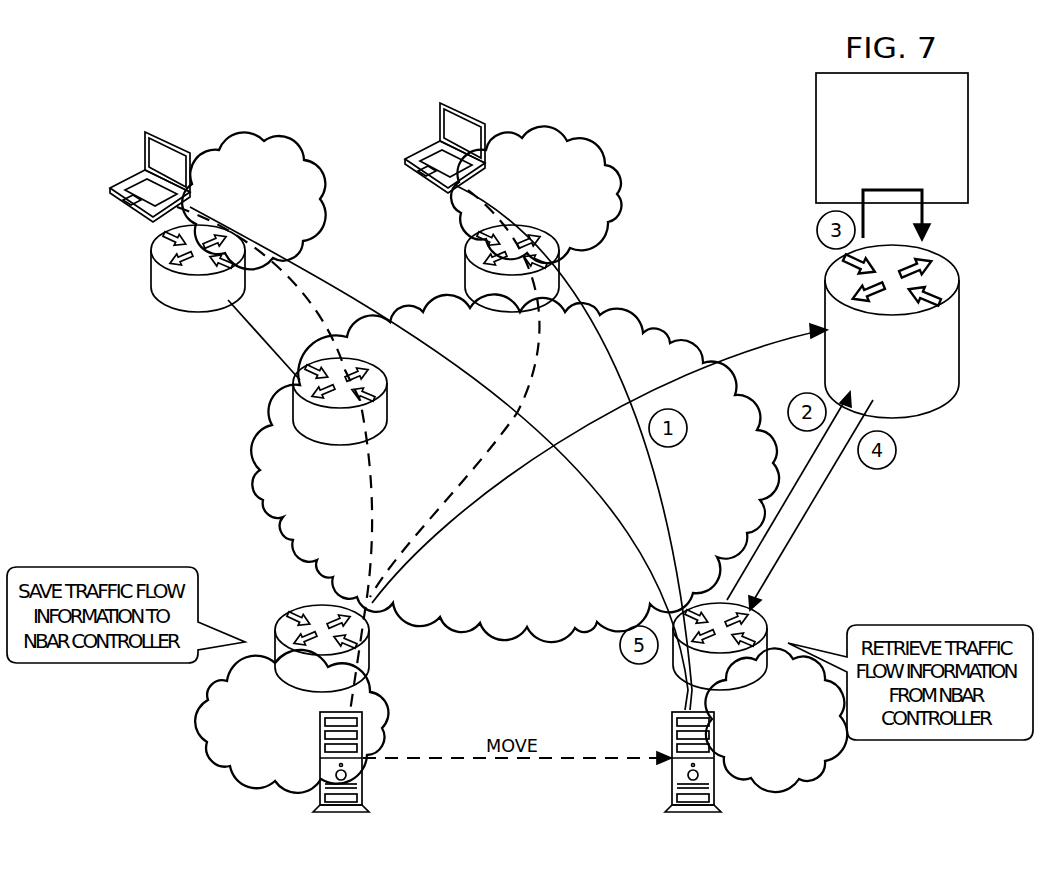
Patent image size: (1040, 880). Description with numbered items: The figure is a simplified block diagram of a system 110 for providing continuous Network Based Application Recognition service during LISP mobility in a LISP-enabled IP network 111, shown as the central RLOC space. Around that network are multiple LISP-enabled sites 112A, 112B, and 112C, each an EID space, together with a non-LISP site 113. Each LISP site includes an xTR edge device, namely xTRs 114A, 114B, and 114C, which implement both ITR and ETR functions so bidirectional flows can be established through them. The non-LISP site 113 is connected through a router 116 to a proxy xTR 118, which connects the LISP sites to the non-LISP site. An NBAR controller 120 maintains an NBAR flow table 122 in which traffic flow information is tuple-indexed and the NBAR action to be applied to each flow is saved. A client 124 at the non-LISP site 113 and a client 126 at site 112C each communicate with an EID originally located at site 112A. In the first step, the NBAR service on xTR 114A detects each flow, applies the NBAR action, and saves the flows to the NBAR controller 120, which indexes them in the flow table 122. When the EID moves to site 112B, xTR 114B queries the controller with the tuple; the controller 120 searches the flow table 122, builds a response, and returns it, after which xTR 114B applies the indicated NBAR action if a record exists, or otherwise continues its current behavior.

The system 110 is at (218, 72).
The LISP-enabled IP network 111 is at (502, 603).
The LISP-enabled site 112A is at (200, 742).
The LISP-enabled site 112B is at (820, 768).
The LISP-enabled site 112C is at (560, 137).
The non-LISP site 113 is at (262, 137).
The xTR 114A is at (293, 605).
The xTR 114B is at (770, 623).
The xTR 114C is at (463, 270).
The router 116 is at (150, 277).
The proxy xTR 118 is at (340, 447).
The NBAR controller 120 is at (960, 330).
The NBAR flow table 122 is at (968, 152).
The client 124 is at (128, 178).
The client 126 is at (420, 147).